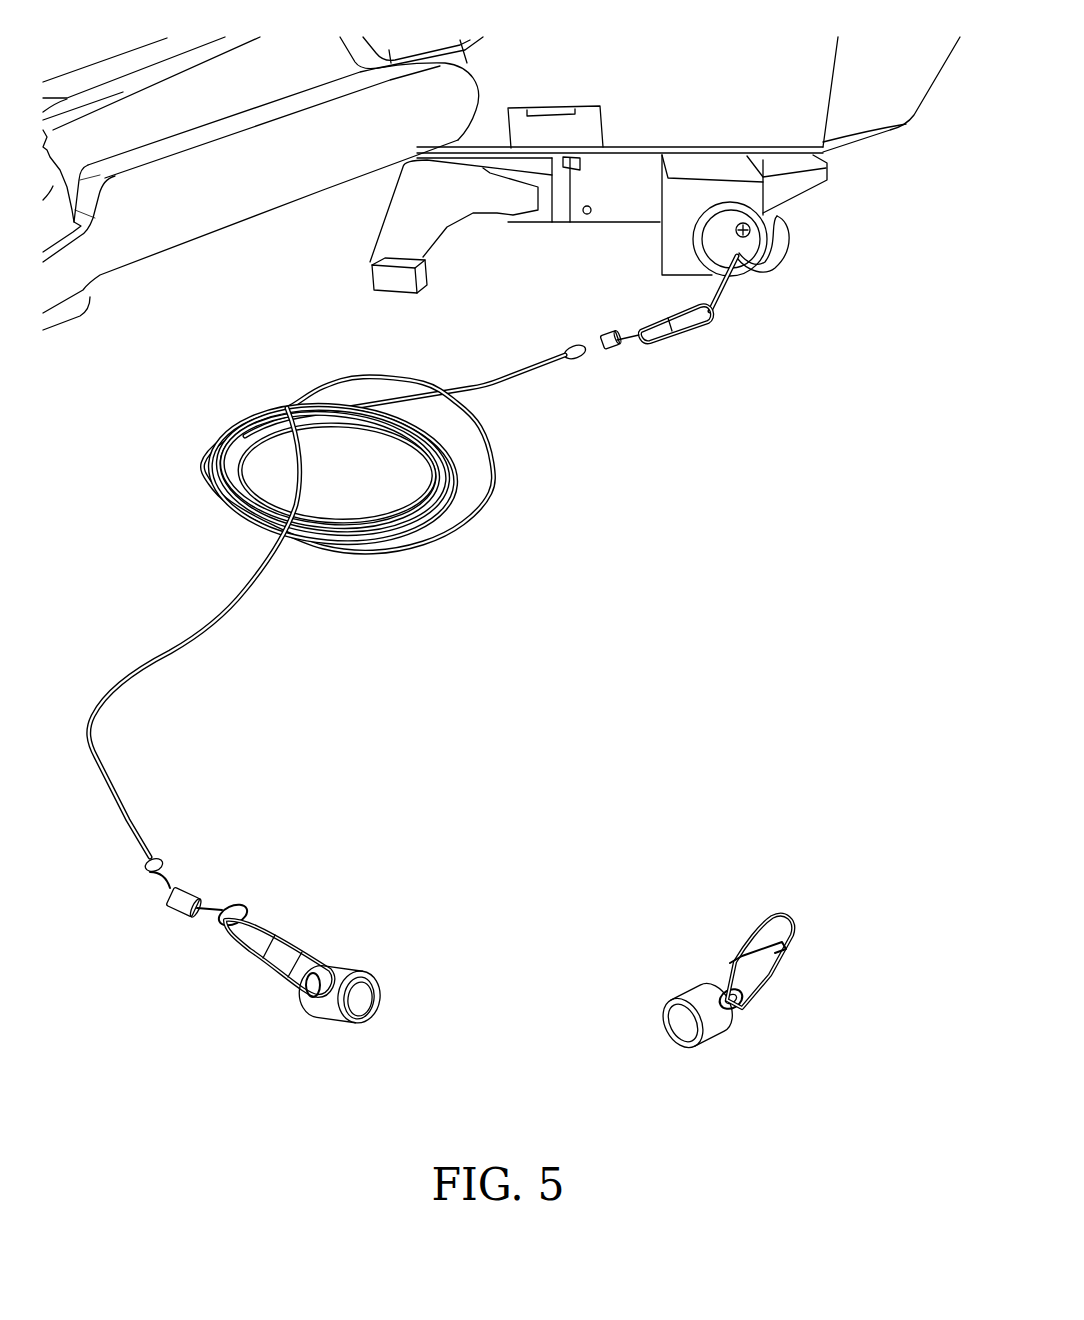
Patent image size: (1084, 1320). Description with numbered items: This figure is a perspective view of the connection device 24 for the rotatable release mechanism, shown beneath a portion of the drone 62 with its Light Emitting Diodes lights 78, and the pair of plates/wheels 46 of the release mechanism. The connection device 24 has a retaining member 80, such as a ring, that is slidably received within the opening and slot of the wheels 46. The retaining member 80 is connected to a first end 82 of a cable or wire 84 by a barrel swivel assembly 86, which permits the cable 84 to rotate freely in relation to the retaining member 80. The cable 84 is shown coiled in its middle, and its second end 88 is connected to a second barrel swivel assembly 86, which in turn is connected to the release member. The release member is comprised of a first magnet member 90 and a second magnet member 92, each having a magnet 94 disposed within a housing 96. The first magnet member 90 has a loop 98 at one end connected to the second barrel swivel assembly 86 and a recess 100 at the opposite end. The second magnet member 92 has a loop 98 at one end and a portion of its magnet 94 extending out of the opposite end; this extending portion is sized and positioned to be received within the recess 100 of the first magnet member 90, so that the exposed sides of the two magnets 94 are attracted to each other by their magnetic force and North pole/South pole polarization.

The connection device 24 is at (548, 400).
The plates/wheels 46 is at (757, 267).
The drone 62 is at (625, 130).
The Light Emitting Diodes lights 78 is at (47, 140).
The retaining member 80 is at (720, 295).
The first end 82 is at (700, 327).
The cable or wire 84 is at (227, 617).
The barrel swivel assembly 86 is at (613, 347).
The second end 88 is at (160, 858).
The first magnet member 90 is at (337, 968).
The second magnet member 92 is at (687, 997).
The magnet 94 is at (360, 1022).
The housing 96 is at (327, 1018).
The loop 98 is at (307, 997).
The recess 100 is at (372, 992).